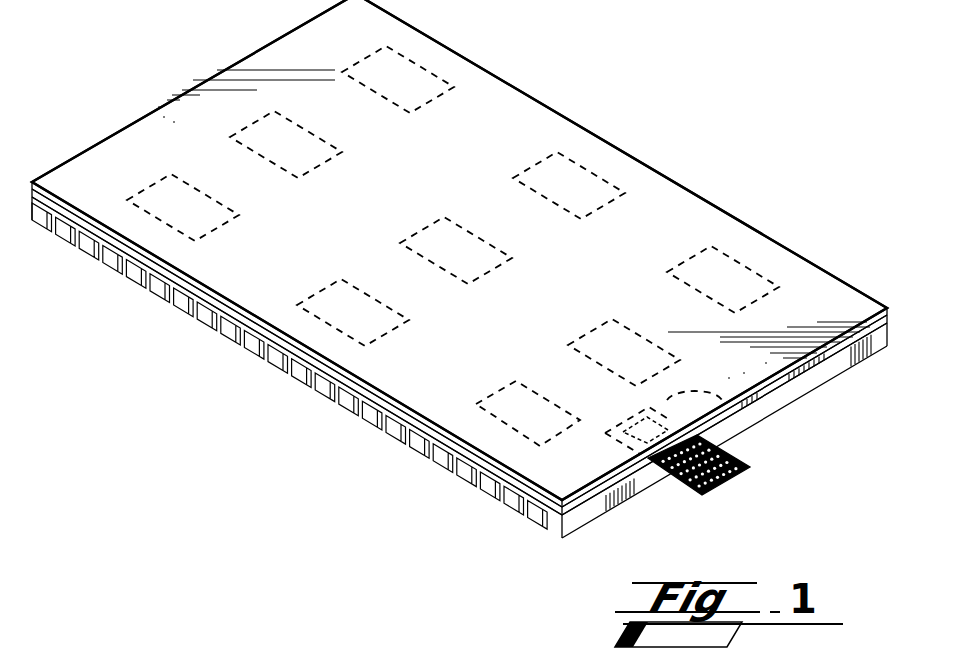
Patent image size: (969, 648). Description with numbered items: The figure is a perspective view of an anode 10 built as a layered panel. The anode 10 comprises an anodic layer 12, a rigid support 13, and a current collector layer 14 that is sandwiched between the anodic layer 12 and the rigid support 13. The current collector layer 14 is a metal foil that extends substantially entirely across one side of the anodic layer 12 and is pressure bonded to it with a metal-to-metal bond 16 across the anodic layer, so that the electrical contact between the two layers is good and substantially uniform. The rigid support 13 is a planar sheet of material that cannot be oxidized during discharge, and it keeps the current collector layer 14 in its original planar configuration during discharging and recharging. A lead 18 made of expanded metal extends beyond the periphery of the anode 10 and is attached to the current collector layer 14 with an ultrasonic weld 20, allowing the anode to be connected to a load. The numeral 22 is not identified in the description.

The anode 10 is at (684, 110).
The anodic layer 12 is at (255, 353).
The rigid support 13 is at (515, 110).
The current collector layer 14 is at (213, 303).
The metal-to-metal bond 16 is at (148, 193).
The lead 18 is at (725, 488).
The ultrasonic weld 20 is at (722, 400).
The lower element 22 is at (159, 640).